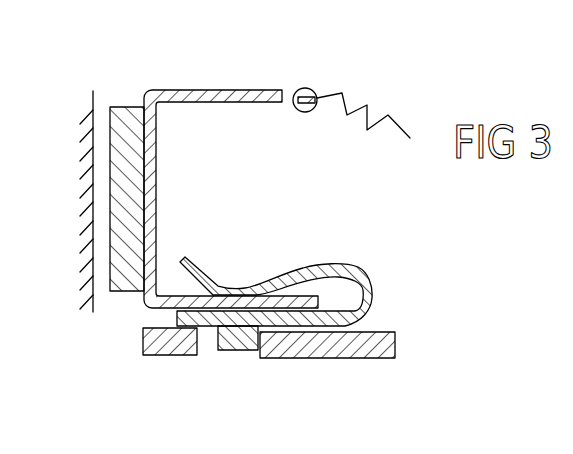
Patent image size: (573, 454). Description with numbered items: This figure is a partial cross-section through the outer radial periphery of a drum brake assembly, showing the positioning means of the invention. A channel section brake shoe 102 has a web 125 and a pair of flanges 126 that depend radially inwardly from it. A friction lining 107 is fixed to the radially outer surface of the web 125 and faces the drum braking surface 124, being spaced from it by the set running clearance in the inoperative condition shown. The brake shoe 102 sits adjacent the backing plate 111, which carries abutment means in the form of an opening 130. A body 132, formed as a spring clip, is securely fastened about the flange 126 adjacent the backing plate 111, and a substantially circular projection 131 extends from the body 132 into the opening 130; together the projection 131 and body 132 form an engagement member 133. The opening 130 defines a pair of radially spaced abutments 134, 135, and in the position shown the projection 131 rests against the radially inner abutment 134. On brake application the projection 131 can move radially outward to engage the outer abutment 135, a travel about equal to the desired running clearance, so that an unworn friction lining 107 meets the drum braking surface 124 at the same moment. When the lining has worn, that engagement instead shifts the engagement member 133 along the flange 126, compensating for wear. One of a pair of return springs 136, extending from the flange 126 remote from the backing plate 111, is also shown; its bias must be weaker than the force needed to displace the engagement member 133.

The brake shoe 102 is at (272, 67).
The friction lining 107 is at (108, 243).
The backing plate 111 is at (358, 350).
The drum braking surface 124 is at (96, 104).
The web 125 is at (156, 155).
The flange 126 is at (208, 97).
The opening 130 is at (213, 355).
The projection 131 is at (239, 343).
The body 132 is at (373, 294).
The engagement member 133 is at (320, 234).
The radially inner abutment 134 is at (257, 346).
The radially outer abutment 135 is at (198, 355).
The spring 136 is at (368, 108).